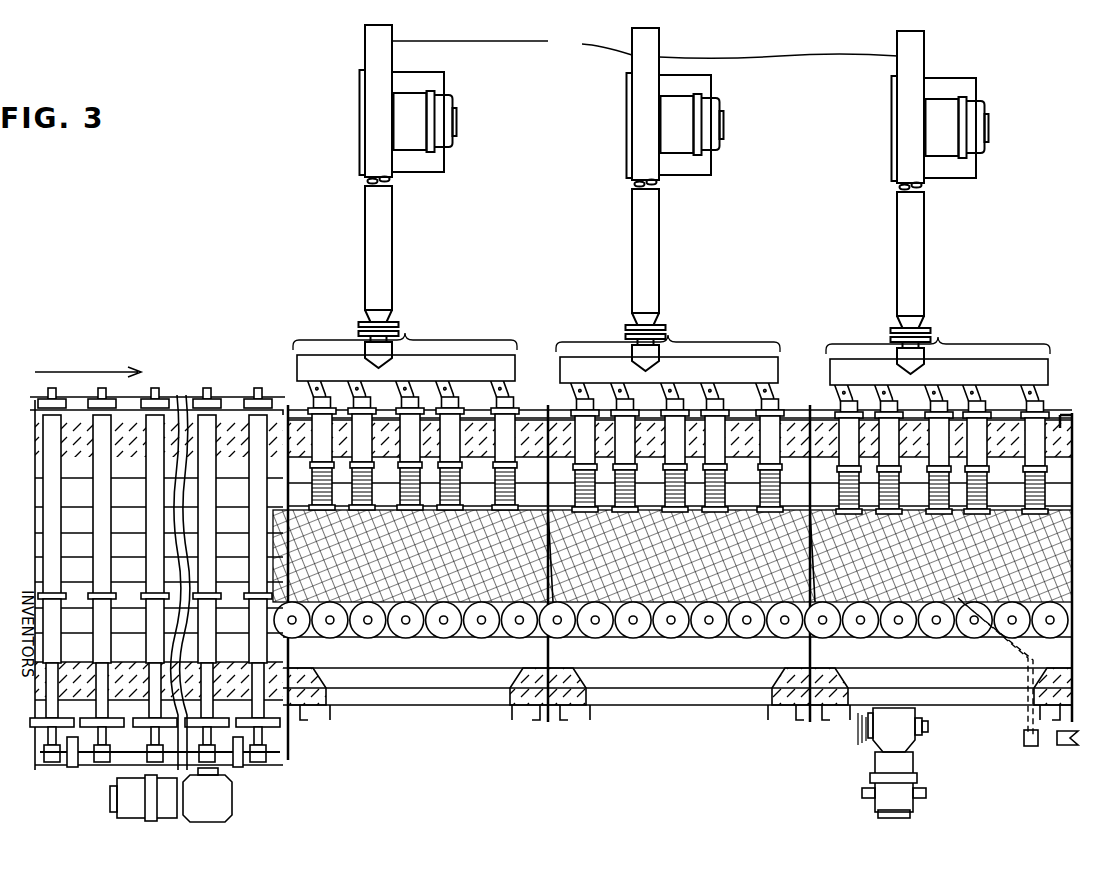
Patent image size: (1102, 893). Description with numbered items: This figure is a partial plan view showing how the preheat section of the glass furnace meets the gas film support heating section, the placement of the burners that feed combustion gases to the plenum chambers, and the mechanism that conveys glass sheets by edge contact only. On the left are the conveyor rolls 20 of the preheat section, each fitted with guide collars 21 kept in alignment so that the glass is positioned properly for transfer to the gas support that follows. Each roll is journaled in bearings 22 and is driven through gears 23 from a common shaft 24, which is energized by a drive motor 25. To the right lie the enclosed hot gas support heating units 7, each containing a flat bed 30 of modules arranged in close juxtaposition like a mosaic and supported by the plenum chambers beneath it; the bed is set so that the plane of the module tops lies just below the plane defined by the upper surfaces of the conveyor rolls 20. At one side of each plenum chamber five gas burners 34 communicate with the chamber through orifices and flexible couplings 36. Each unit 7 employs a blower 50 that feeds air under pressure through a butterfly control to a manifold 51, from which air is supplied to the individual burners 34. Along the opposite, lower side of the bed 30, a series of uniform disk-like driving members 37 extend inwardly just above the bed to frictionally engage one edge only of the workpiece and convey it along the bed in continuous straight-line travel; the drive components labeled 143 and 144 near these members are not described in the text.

The hot gas support heating unit 7 is at (405, 333).
The blower 50 is at (645, 43).
The manifold 51 is at (558, 357).
The gas burners 34 is at (455, 408).
The flexible couplings 36 is at (455, 487).
The flat bed 30 is at (520, 530).
The disk-like driving members 37 is at (745, 638).
The drive motor 143 is at (957, 605).
The drive linkage 144 is at (1024, 745).
The conveyor rolls 20 is at (200, 523).
The guide collars 21 is at (252, 592).
The bearings 22 is at (190, 395).
The gears 23 is at (212, 768).
The common shaft 24 is at (262, 765).
The drive motor 25 is at (143, 798).